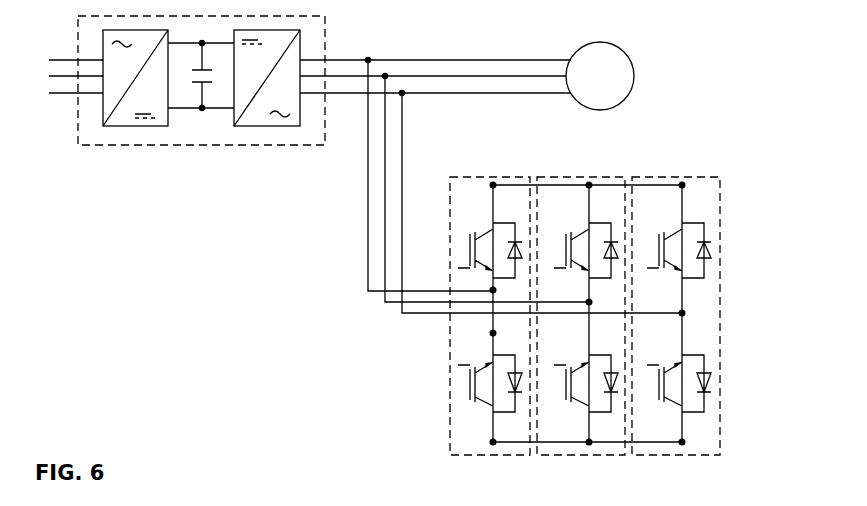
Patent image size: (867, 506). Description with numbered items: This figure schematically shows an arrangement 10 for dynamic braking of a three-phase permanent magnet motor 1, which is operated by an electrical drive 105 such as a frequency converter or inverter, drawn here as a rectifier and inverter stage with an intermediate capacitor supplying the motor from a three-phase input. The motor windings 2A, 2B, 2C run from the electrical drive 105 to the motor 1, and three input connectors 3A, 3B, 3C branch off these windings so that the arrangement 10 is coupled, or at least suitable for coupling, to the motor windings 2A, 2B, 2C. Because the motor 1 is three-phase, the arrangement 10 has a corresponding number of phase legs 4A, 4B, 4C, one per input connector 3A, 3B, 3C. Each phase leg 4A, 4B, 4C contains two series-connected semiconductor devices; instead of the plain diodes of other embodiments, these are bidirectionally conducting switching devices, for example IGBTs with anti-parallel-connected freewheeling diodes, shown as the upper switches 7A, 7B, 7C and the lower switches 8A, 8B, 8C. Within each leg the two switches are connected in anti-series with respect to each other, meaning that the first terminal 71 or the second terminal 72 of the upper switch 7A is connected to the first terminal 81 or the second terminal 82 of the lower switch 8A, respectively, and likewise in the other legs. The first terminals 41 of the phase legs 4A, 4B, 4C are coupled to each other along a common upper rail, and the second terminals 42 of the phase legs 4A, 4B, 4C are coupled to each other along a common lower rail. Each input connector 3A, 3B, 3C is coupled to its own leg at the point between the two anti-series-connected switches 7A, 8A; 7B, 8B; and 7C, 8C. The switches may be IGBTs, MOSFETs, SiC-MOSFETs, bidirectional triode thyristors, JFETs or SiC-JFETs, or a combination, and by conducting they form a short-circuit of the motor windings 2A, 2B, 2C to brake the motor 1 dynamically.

The permanent magnet motor 1 is at (593, 86).
The arrangement 10 is at (705, 103).
The electrical drive 105 is at (192, 147).
The motor winding 2A is at (423, 59).
The motor winding 2B is at (454, 76).
The motor winding 2C is at (485, 93).
The input connector 3A is at (368, 177).
The input connector 3B is at (385, 212).
The input connector 3C is at (402, 313).
The phase leg 4A is at (513, 177).
The phase leg 4B is at (612, 177).
The phase leg 4C is at (698, 177).
The first terminal 41 is at (493, 185).
The second terminal 42 is at (493, 452).
The semiconductor switch 7A is at (463, 220).
The semiconductor switch 7B is at (578, 228).
The semiconductor switch 7C is at (705, 208).
The first terminal of switch 71 is at (493, 185).
The second terminal of switch 72 is at (493, 290).
The semiconductor switch 8A is at (462, 383).
The semiconductor switch 8B is at (580, 360).
The semiconductor switch 8C is at (700, 345).
The first terminal of switch 81 is at (493, 442).
The second terminal of switch 82 is at (493, 333).